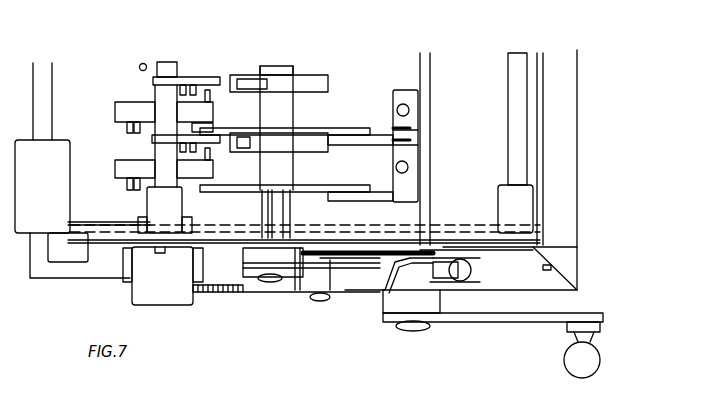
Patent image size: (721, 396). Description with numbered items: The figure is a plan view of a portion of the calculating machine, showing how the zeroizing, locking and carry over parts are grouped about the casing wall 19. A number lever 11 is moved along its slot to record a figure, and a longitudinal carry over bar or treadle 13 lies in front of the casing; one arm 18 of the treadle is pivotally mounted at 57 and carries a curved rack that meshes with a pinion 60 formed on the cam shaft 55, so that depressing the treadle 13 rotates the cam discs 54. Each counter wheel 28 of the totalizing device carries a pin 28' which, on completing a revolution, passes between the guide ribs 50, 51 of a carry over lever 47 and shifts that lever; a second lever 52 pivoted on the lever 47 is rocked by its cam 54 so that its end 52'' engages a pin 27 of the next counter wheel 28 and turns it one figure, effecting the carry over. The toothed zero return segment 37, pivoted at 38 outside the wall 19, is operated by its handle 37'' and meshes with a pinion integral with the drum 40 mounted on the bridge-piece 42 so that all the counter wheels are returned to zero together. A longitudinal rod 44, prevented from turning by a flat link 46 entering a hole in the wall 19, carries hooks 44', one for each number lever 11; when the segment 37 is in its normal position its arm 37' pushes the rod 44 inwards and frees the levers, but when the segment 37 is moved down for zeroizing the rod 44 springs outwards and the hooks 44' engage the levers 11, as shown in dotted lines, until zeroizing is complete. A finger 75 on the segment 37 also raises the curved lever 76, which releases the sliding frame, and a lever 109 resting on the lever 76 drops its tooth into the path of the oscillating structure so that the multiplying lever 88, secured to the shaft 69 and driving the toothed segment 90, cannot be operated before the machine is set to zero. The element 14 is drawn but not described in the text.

The number lever 11 is at (408, 110).
The carry over bar or treadle 13 is at (52, 148).
The bar 14 is at (272, 131).
The arm of the treadle 18 is at (78, 236).
The wall 19 is at (543, 250).
The pin of counter wheel 27 is at (130, 126).
The counter wheel 28 is at (150, 109).
The pin 28' is at (180, 162).
The toothed zero return segment 37 is at (226, 303).
The arm of the segment 37' is at (392, 286).
The handle of the segment 37'' is at (455, 242).
The pivot of the segment 38 is at (320, 302).
The drum 40 is at (130, 268).
The bridge-piece 42 is at (145, 292).
The longitudinal rod 44 is at (428, 146).
The hooks 44' is at (435, 150).
The flat link 46 is at (378, 252).
The carry over lever 47 is at (215, 95).
The guide rib 50 is at (165, 80).
The guide rib 51 is at (208, 88).
The second lever 52 is at (200, 56).
The end of the lever 52'' is at (145, 56).
The cam disc 54 is at (320, 85).
The cam shaft 55 is at (287, 172).
The pivot of the treadle arm 57 is at (518, 177).
The pinion 60 is at (283, 213).
The shaft 69 is at (410, 331).
The finger 75 is at (365, 272).
The curved lever 76 is at (300, 265).
The multiplying lever 88 is at (533, 322).
The toothed segment 90 is at (550, 267).
The lever 109 is at (297, 262).